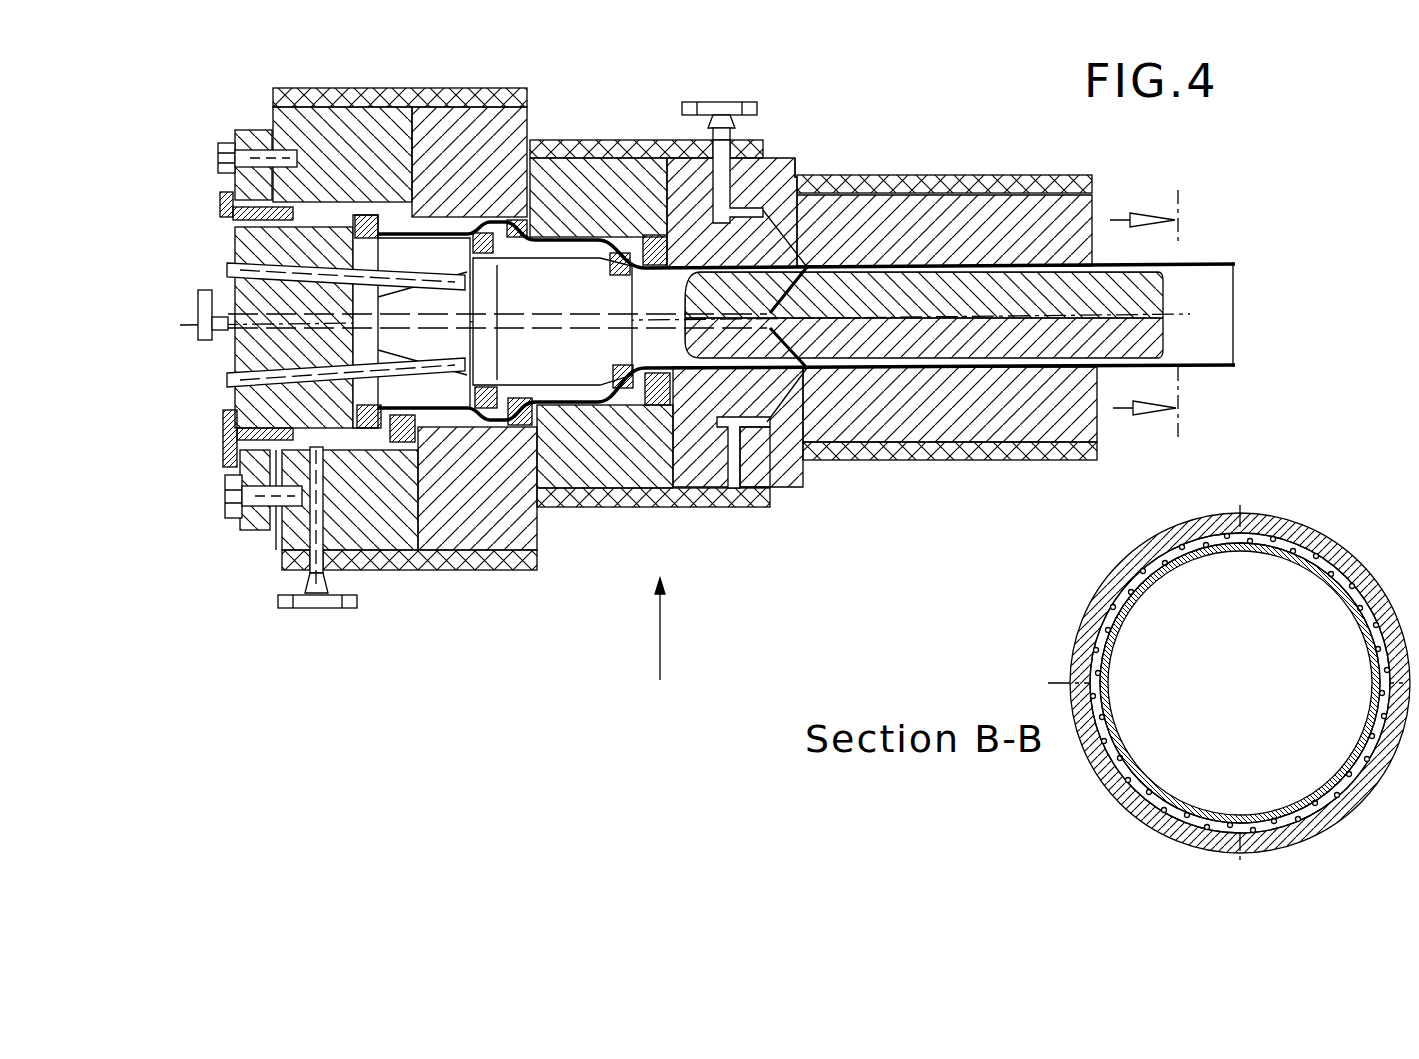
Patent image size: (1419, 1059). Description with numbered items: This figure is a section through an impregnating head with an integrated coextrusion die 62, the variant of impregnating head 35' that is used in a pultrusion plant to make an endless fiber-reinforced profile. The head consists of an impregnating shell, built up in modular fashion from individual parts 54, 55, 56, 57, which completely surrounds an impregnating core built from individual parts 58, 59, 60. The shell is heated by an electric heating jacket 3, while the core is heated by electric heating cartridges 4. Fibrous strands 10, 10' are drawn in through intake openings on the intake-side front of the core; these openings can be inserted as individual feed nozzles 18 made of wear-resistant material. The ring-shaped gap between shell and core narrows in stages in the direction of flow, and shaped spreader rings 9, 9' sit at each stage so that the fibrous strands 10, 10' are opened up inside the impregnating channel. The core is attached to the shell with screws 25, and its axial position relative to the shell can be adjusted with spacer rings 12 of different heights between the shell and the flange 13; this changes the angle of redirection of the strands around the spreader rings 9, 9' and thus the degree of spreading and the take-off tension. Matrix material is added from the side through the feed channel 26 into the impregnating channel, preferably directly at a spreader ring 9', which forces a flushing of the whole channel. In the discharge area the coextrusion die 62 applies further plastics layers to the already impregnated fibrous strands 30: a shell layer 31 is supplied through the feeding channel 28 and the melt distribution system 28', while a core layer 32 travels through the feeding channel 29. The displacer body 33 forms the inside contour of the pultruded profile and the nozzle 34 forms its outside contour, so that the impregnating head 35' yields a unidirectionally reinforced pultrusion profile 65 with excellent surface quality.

The electric heating jacket 3 is at (373, 105).
The electric heating cartridges 4 is at (230, 268).
The spreader ring 9 is at (469, 127).
The spreader ring 9' is at (512, 240).
The fibrous strand 10 is at (226, 457).
The fibrous strand 10' is at (221, 192).
The spacer rings 12 is at (275, 530).
The flange 13 is at (247, 520).
The feed nozzle 18 is at (218, 168).
The screws 25 is at (213, 150).
The feed channel 26 is at (316, 610).
The feeding channel 28 is at (719, 89).
The melt distribution system 28' is at (751, 346).
The feeding channel 29 is at (200, 320).
The impregnated fibrous strands 30 is at (640, 410).
The shell layer 31 is at (1092, 617).
The core layer 32 is at (1112, 580).
The displacer body 33 is at (1168, 292).
The nozzle 34 is at (880, 220).
The impregnating head 35' is at (668, 648).
The individual part 54 is at (393, 535).
The individual part 55 is at (485, 530).
The individual part 56 is at (590, 495).
The individual part 57 is at (757, 490).
The individual part 58 is at (340, 247).
The individual part 59 is at (423, 258).
The individual part 60 is at (540, 280).
The coextrusion die 62 is at (857, 485).
The pultrusion profile 65 is at (1190, 262).